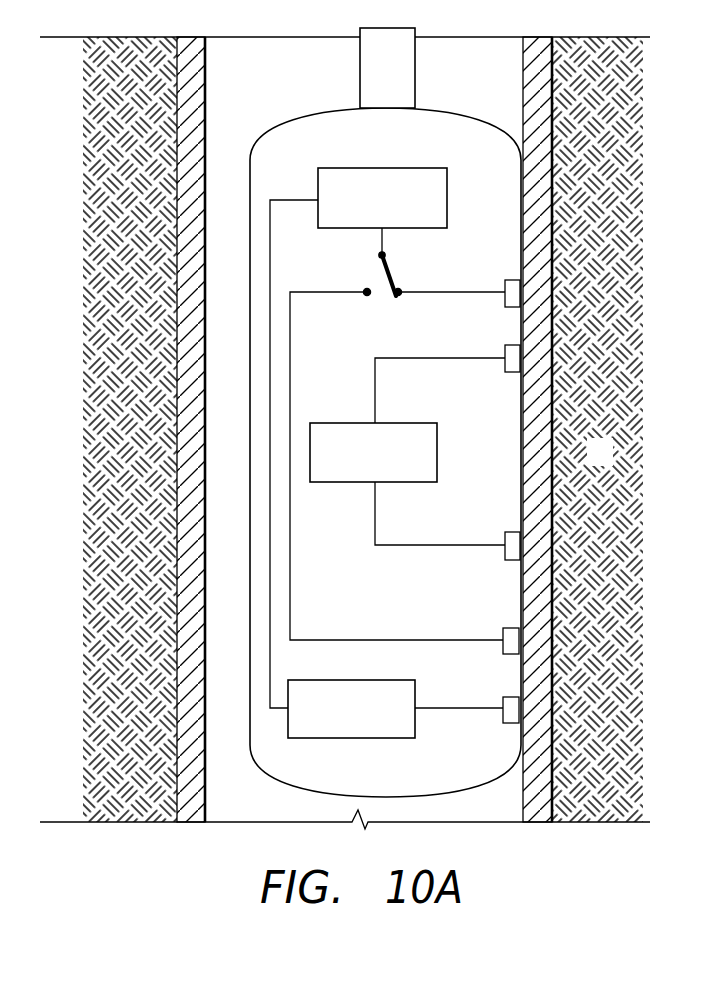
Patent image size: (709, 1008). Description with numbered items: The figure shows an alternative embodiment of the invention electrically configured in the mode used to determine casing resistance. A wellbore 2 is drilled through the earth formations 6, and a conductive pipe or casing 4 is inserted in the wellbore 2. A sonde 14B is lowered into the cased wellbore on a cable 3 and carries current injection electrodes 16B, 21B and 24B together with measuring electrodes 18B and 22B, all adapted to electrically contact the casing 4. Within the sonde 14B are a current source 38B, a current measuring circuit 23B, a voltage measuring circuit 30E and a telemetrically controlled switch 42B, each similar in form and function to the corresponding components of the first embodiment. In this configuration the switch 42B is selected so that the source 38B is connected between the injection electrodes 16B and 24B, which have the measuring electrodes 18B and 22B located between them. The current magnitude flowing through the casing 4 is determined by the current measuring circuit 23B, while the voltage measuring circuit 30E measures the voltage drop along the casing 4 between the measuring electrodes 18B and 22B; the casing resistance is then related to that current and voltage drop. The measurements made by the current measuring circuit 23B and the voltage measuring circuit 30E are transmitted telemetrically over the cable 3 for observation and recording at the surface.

The wellbore 2 is at (552, 68).
The cable 3 is at (360, 75).
The casing 4 is at (536, 101).
The earth formations 6 is at (608, 463).
The sonde 14B is at (299, 99).
The current injection electrode 16B is at (512, 280).
The measuring electrode 18B is at (512, 345).
The current injection electrode 21B is at (510, 628).
The measuring electrode 22B is at (511, 532).
The current measuring circuit 23B is at (347, 168).
The current injection electrode 24B is at (510, 697).
The voltage measuring circuit 30E is at (394, 423).
The current source 38B is at (372, 680).
The telemetrically controlled switch 42B is at (382, 270).